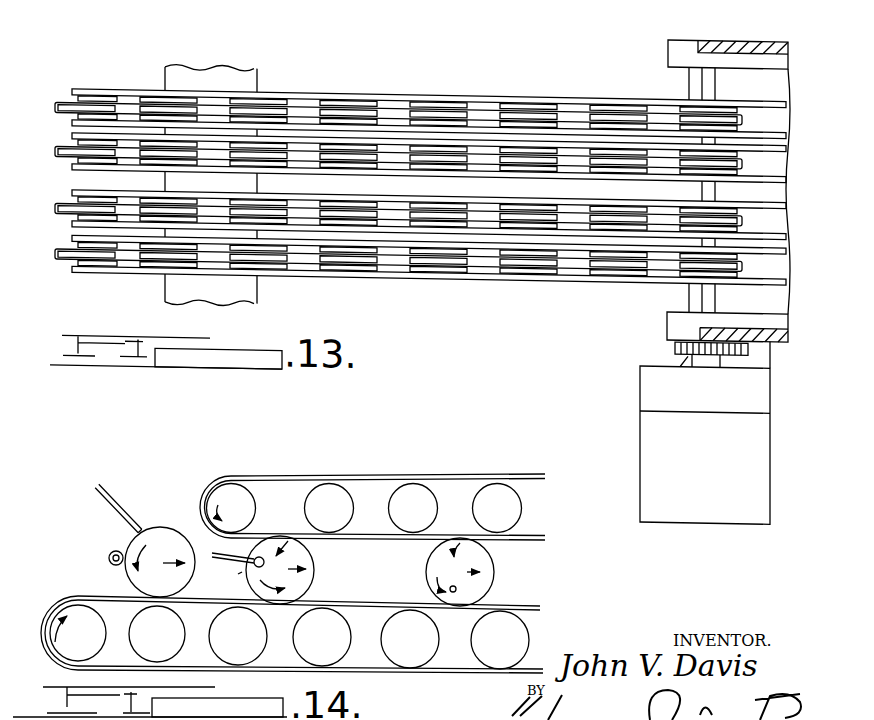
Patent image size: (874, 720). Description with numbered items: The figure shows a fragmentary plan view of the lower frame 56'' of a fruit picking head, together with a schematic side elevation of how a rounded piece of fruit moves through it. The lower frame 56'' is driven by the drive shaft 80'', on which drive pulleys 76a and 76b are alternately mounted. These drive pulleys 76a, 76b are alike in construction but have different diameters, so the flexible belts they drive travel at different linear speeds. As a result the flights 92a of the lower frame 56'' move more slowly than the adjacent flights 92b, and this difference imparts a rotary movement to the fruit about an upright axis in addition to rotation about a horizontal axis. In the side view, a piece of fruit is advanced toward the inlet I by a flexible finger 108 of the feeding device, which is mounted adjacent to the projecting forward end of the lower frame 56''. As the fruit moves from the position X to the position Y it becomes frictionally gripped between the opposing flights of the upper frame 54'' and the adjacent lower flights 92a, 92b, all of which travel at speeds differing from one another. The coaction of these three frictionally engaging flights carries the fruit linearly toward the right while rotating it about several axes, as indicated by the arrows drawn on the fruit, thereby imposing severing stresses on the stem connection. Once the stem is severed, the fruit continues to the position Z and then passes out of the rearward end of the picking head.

In FIG. 13, the lower frame 56'' is at (420, 172).
In FIG. 14, the lower frame 56'' is at (308, 620).
In FIG. 13, the flights 92a is at (486, 106).
In FIG. 14, the flights 92a is at (534, 606).
In FIG. 13, the flights 92b is at (540, 274).
In FIG. 13, the drive shaft 80'' is at (693, 190).
In FIG. 13, the drive pulley 76a is at (730, 100).
In FIG. 13, the drive pulley 76b is at (708, 165).
In FIG. 14, the upper frame 54'' is at (372, 486).
In FIG. 14, the position X is at (158, 529).
In FIG. 14, the position Y is at (273, 541).
In FIG. 14, the position Z is at (491, 565).
In FIG. 14, the inlet I is at (231, 575).
In FIG. 14, the flexible finger 108 is at (110, 553).